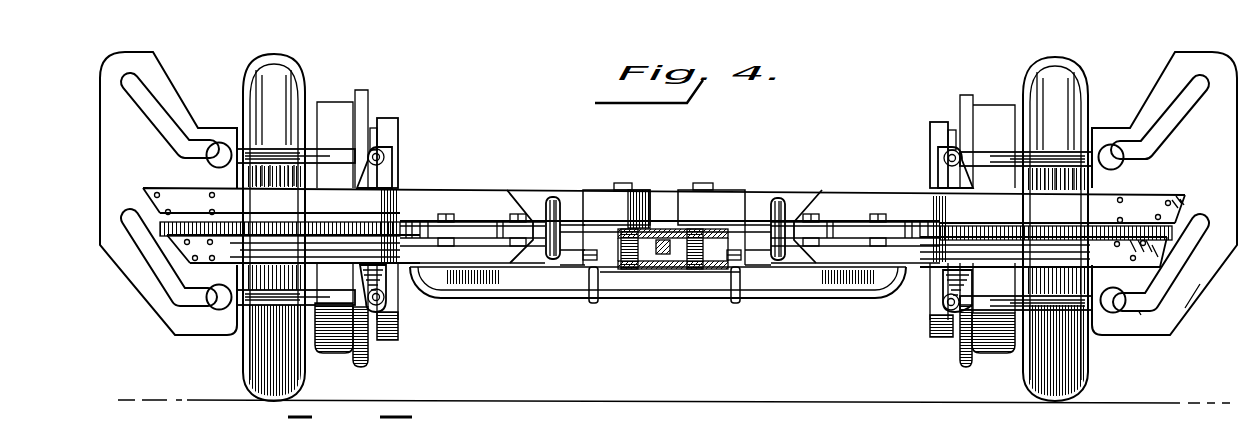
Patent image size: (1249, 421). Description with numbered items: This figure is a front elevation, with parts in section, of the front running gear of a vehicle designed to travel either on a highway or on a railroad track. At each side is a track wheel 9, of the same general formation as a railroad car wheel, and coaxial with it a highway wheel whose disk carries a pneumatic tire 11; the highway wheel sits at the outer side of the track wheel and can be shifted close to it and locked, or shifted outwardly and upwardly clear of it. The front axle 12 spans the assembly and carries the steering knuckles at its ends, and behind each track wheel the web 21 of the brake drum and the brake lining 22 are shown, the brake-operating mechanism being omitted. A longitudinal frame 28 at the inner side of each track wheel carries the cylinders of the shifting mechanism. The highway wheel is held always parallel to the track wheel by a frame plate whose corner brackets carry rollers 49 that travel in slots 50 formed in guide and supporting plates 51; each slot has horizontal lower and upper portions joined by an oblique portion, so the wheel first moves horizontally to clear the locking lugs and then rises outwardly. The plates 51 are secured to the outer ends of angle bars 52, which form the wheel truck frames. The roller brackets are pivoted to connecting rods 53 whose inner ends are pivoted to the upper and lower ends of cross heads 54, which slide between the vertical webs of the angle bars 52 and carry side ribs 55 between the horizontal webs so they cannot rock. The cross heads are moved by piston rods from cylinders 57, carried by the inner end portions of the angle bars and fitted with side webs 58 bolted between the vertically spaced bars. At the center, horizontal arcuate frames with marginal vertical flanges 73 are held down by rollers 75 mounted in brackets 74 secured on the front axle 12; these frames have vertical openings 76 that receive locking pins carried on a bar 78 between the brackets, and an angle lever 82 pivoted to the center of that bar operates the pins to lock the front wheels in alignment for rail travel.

The track wheel 9 is at (988, 353).
The pneumatic tire 11 is at (1077, 397).
The front axle 12 is at (645, 285).
The web of brake drum 21 is at (955, 128).
The brake lining 22 is at (124, 414).
The frame 28 is at (930, 327).
The roller 49 is at (217, 307).
The slot 50 is at (1170, 286).
The guide and supporting plate 51 is at (1182, 325).
The angle bar 52 is at (1122, 261).
The connecting rod 53 is at (987, 310).
The cross head 54 is at (943, 178).
The side rib 55 is at (957, 233).
The cylinder 57 is at (793, 210).
The side web 58 is at (847, 233).
The vertical flange 73 is at (728, 197).
The bracket 74 is at (577, 253).
The roller 75 is at (703, 188).
The vertical opening 76 is at (692, 225).
The bar 78 is at (667, 230).
The angle lever 82 is at (682, 277).